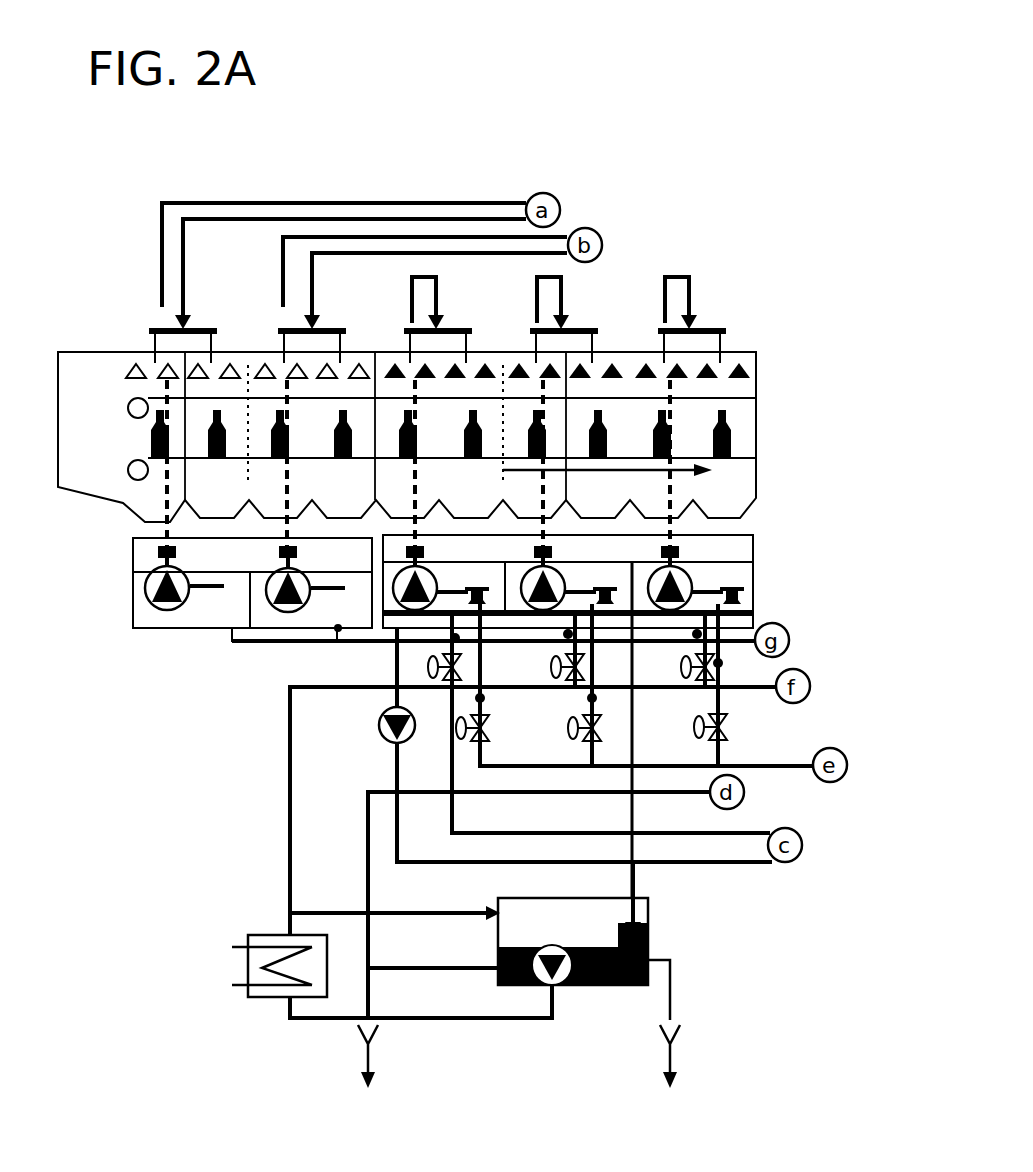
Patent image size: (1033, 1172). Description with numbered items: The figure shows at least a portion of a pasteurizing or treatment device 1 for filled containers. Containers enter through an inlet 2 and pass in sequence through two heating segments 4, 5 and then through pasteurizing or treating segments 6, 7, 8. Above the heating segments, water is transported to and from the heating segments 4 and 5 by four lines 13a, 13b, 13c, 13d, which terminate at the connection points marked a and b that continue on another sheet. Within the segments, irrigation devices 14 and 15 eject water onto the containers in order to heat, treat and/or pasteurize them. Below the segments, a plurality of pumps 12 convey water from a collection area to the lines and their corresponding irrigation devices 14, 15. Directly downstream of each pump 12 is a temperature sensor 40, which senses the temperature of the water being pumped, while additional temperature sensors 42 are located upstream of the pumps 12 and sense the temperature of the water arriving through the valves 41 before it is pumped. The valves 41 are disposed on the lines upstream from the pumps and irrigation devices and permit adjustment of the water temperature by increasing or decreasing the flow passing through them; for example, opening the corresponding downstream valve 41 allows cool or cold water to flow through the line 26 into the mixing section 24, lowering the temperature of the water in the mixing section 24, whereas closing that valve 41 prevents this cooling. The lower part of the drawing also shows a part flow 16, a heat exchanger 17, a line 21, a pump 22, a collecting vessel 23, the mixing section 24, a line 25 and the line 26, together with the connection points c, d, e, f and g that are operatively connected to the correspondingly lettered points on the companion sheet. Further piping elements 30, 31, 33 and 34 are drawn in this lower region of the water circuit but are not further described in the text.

The pasteurizing or treatment device 1 is at (700, 245).
The inlet 2 is at (75, 415).
The heating segment 4 is at (226, 498).
The heating segment 5 is at (330, 496).
The pasteurizing or treating segment 6 is at (454, 496).
The pasteurizing or treating segment 7 is at (596, 504).
The pasteurizing or treating segment 8 is at (736, 498).
The pump 12 is at (153, 582).
The line 13a is at (214, 203).
The line 13b is at (280, 219).
The line 13c is at (364, 237).
The line 13d is at (418, 253).
The irrigation device 14 is at (213, 363).
The irrigation device 15 is at (458, 360).
The part flow 16 is at (637, 877).
The heat exchanger 17 is at (258, 952).
The line 21 is at (397, 752).
The pump 22 is at (377, 722).
The collecting vessel 23 is at (760, 535).
The mixing section 24 is at (393, 637).
The line 25 is at (512, 668).
The line 26 is at (782, 766).
The line d 30 is at (655, 794).
The connecting line 31 is at (758, 830).
The line f 33 is at (752, 690).
The collecting pipe 34 is at (753, 615).
The temperature sensor 40 is at (150, 543).
The valve 41 is at (695, 736).
The temperature sensor 42 is at (283, 636).